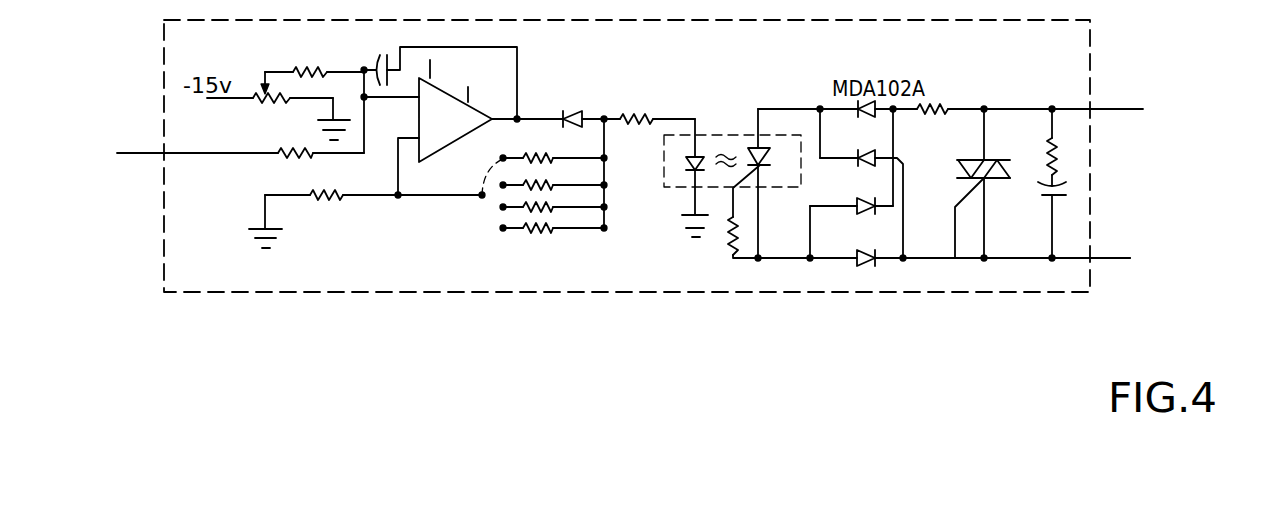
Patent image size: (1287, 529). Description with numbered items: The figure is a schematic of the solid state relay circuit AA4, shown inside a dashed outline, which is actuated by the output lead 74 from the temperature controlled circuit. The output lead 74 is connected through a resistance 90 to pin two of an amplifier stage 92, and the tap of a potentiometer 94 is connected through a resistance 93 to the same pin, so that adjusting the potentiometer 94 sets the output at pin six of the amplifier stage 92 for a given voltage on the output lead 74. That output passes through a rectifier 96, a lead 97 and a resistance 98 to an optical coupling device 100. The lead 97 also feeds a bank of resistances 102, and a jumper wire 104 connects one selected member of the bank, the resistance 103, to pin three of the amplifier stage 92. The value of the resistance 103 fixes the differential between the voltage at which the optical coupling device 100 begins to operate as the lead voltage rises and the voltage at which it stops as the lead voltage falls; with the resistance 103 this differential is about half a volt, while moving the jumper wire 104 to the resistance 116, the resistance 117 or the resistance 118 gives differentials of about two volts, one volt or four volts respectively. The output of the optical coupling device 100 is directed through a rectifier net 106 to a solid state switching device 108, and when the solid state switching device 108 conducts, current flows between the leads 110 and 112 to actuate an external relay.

The output lead 74 is at (145, 154).
The resistance 90 is at (302, 148).
The amplifier stage 92 is at (446, 145).
The resistance 93 is at (314, 67).
The potentiometer 94 is at (266, 101).
The rectifier 96 is at (559, 127).
The lead 97 is at (613, 119).
The resistance 98 is at (629, 112).
The optical coupling device 100 is at (669, 193).
The bank of resistances 102 is at (648, 209).
The resistance 103 is at (545, 164).
The jumper wire 104 is at (490, 168).
The rectifier net 106 is at (947, 154).
The solid state switching device 108 is at (995, 180).
The lead 110 is at (1107, 108).
The lead 112 is at (1108, 259).
The resistance 116 is at (545, 212).
The resistance 117 is at (545, 190).
The resistance 118 is at (545, 233).
The solid state relay circuit AA4 is at (697, 292).